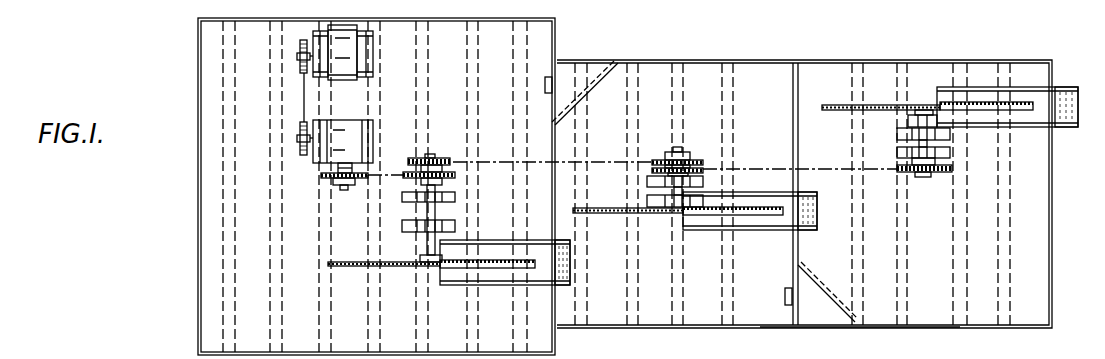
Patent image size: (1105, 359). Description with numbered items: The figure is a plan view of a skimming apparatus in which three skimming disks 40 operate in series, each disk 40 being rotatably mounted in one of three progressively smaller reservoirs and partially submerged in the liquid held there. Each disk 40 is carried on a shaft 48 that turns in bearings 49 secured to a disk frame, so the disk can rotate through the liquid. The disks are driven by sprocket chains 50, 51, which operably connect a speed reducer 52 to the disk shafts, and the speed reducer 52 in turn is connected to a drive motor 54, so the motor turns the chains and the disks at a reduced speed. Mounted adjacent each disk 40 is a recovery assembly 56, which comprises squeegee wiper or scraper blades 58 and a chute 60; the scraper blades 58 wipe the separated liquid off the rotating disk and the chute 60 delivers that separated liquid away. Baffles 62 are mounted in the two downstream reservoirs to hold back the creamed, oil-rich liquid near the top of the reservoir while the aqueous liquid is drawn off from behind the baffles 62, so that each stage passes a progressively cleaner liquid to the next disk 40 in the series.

The disk 40 is at (860, 343).
The shaft 48 is at (436, 205).
The bearings 49 is at (402, 225).
The sprocket chain 50 is at (408, 175).
The sprocket chain 51 is at (304, 108).
The speed reducer 52 is at (373, 142).
The drive motor 54 is at (374, 50).
The recovery assembly 56 is at (507, 287).
The scraper blades 58 is at (485, 256).
The chute 60 is at (565, 285).
The baffles 62 is at (588, 100).